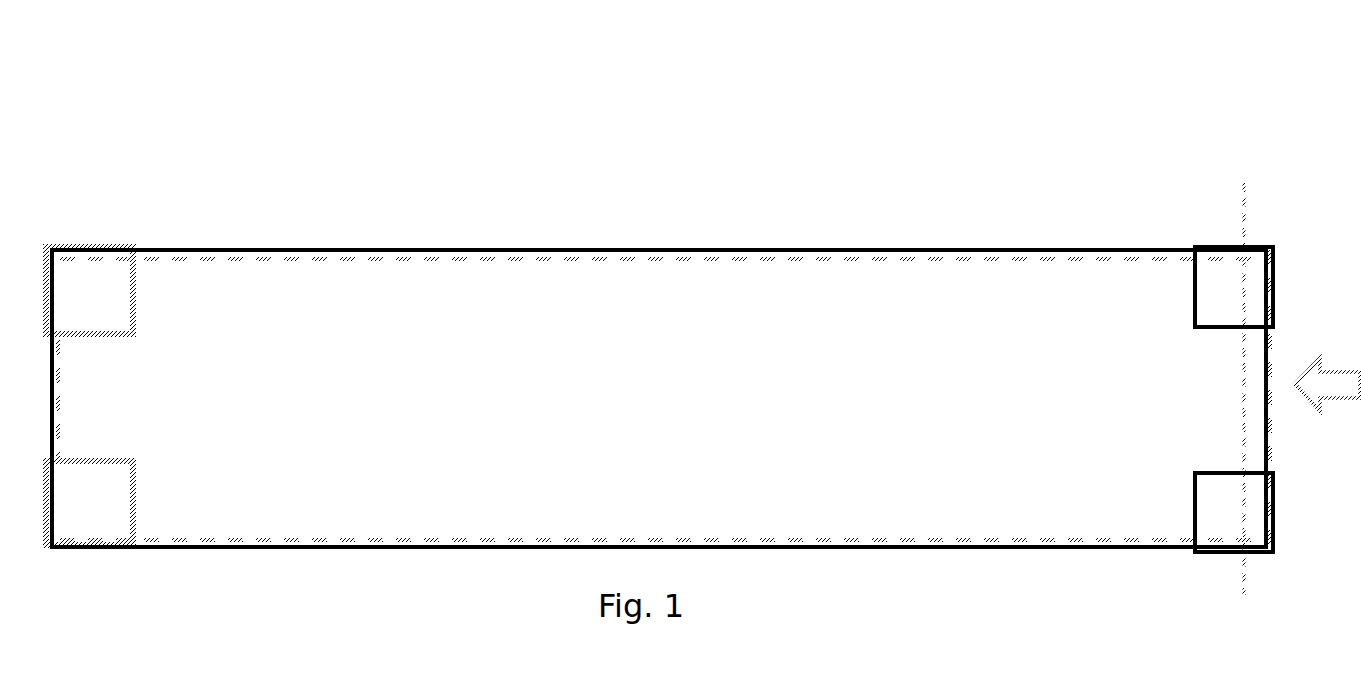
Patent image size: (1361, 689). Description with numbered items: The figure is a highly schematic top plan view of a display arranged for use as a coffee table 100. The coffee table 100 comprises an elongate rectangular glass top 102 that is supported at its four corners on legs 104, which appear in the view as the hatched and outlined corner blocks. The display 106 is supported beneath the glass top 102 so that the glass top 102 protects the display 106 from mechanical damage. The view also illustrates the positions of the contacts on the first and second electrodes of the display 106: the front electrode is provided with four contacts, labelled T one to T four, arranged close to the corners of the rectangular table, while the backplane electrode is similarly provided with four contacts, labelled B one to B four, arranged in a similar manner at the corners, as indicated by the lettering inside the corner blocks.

The coffee table 100 is at (420, 208).
The glass top 102 is at (617, 406).
The legs 104 is at (132, 285).
The display 106 is at (685, 257).